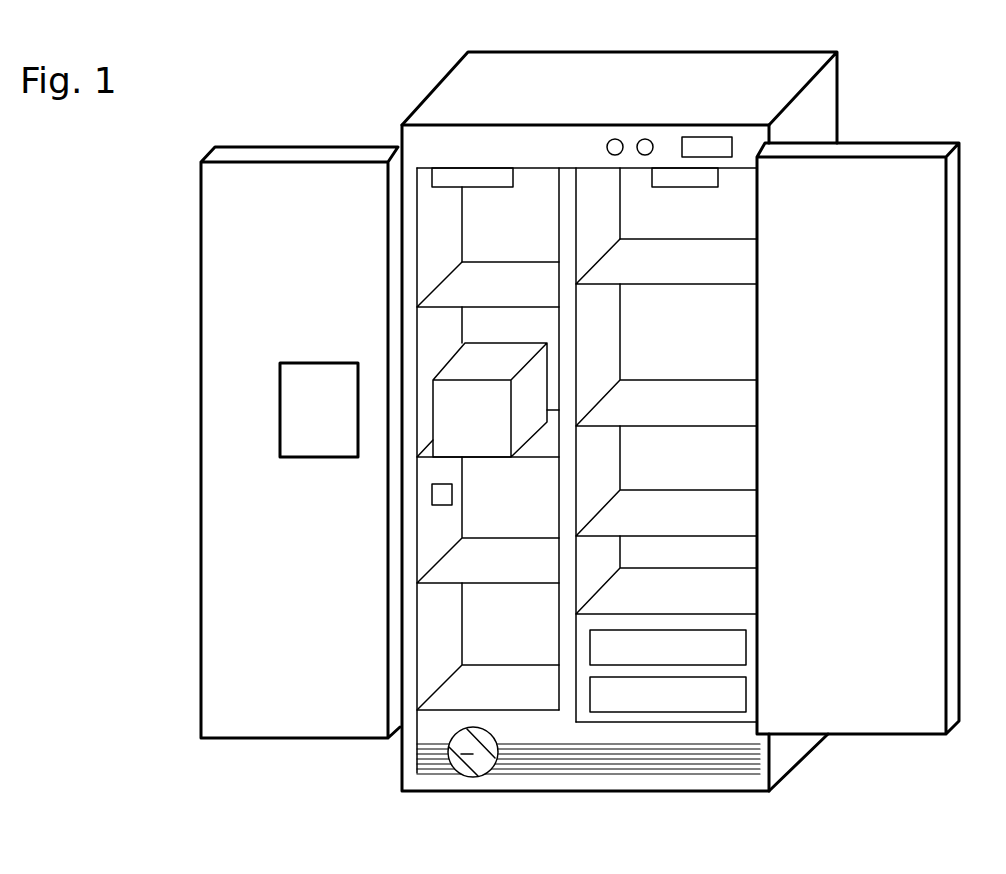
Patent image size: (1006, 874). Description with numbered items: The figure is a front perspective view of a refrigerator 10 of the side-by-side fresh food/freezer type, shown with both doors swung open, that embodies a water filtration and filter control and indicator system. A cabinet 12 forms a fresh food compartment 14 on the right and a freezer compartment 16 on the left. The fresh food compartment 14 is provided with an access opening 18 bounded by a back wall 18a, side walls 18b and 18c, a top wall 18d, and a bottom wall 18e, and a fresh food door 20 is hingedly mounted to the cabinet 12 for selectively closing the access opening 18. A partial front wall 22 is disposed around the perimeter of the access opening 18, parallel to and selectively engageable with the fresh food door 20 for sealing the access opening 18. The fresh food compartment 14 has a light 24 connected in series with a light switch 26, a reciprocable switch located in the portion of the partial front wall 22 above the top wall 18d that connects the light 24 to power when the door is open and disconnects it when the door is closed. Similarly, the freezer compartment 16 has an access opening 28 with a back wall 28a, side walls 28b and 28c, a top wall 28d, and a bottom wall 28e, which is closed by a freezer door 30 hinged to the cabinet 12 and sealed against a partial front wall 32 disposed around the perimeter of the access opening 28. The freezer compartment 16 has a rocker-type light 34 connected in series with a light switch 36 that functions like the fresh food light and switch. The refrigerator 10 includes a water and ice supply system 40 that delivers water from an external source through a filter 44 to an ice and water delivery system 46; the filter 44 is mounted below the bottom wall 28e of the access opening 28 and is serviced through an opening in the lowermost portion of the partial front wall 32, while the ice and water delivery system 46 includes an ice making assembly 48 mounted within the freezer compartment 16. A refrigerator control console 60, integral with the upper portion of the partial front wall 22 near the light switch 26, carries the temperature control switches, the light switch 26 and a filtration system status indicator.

The refrigerator 10 is at (773, 33).
The cabinet 12 is at (547, 72).
The fresh food compartment 14 is at (641, 272).
The freezer compartment 16 is at (474, 250).
The access opening 18 is at (740, 402).
The back wall 18a is at (671, 472).
The side wall 18b is at (570, 346).
The side wall 18c is at (755, 330).
The top wall 18d is at (632, 170).
The bottom wall 18e is at (668, 717).
The fresh food door 20 is at (920, 147).
The partial front wall 22 is at (667, 150).
The light 24 is at (687, 185).
The light switch 26 is at (710, 143).
The access opening 28 is at (480, 510).
The back wall 28a is at (486, 574).
The side wall 28b is at (432, 255).
The side wall 28c is at (558, 232).
The top wall 28d is at (538, 170).
The bottom wall 28e is at (533, 711).
The freezer door 30 is at (292, 146).
The partial front wall 32 is at (488, 143).
The rocker-type light 34 is at (472, 180).
The light switch 36 is at (433, 507).
The water and ice supply system 40 is at (387, 457).
The filter 44 is at (472, 755).
The ice and water delivery system 46 is at (301, 433).
The ice making assembly 48 is at (460, 433).
The refrigerator control console 60 is at (757, 133).